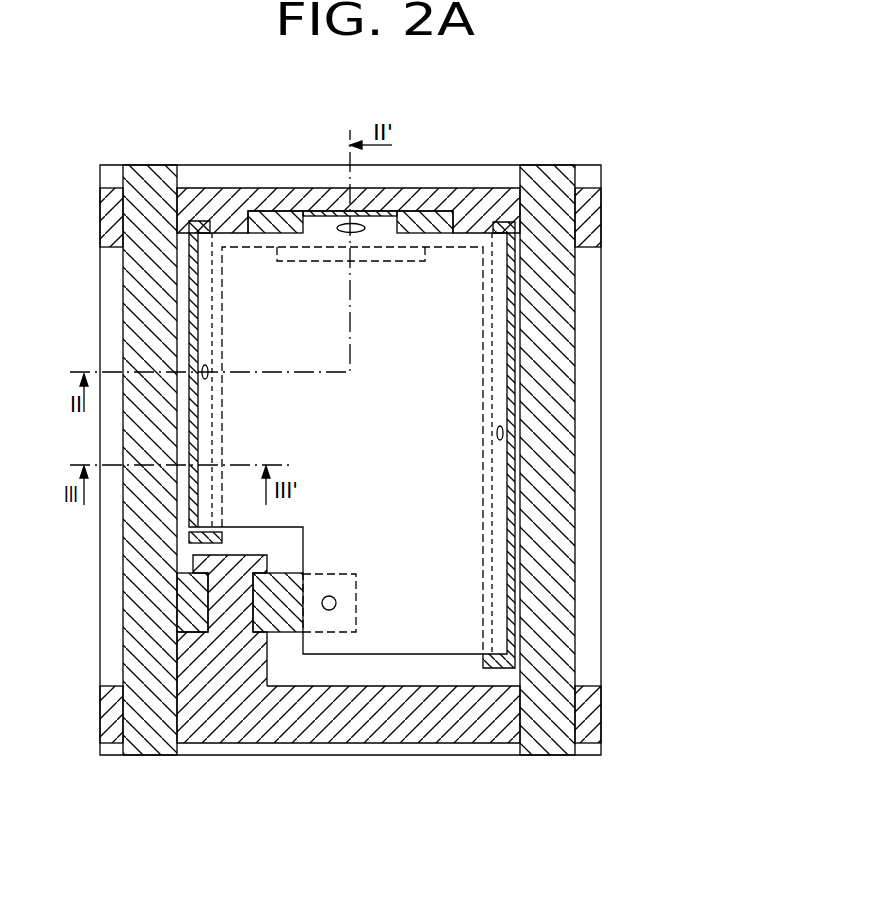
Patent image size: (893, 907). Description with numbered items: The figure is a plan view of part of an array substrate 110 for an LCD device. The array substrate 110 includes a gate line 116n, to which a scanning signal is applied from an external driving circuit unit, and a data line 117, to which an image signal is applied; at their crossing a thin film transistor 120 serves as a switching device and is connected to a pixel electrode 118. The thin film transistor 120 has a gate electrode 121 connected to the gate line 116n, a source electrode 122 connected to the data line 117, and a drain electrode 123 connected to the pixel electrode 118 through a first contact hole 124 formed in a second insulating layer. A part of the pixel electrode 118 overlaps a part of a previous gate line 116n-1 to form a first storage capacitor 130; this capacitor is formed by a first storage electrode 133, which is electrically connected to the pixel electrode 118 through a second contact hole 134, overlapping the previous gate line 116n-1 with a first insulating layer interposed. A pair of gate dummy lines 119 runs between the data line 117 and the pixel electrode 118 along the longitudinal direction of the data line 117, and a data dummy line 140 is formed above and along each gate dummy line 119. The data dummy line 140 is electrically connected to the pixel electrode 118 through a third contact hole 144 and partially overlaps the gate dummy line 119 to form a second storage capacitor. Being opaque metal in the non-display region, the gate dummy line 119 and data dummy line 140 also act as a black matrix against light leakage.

The array substrate 110 is at (616, 164).
The previous gate line 116n-1 is at (602, 213).
The gate line 116n is at (575, 712).
The data line 117 is at (553, 577).
The pixel electrode 118 is at (453, 350).
The gate dummy line 119 is at (190, 538).
The thin film transistor 120 is at (290, 553).
The gate electrode 121 is at (224, 657).
The source electrode 122 is at (189, 618).
The drain electrode 123 is at (278, 618).
The first contact hole 124 is at (331, 612).
The first storage capacitor 130 is at (305, 200).
The first storage electrode 133 is at (425, 212).
The second contact hole 134 is at (333, 212).
The data dummy line 140 is at (196, 526).
The third contact hole 144 is at (503, 433).